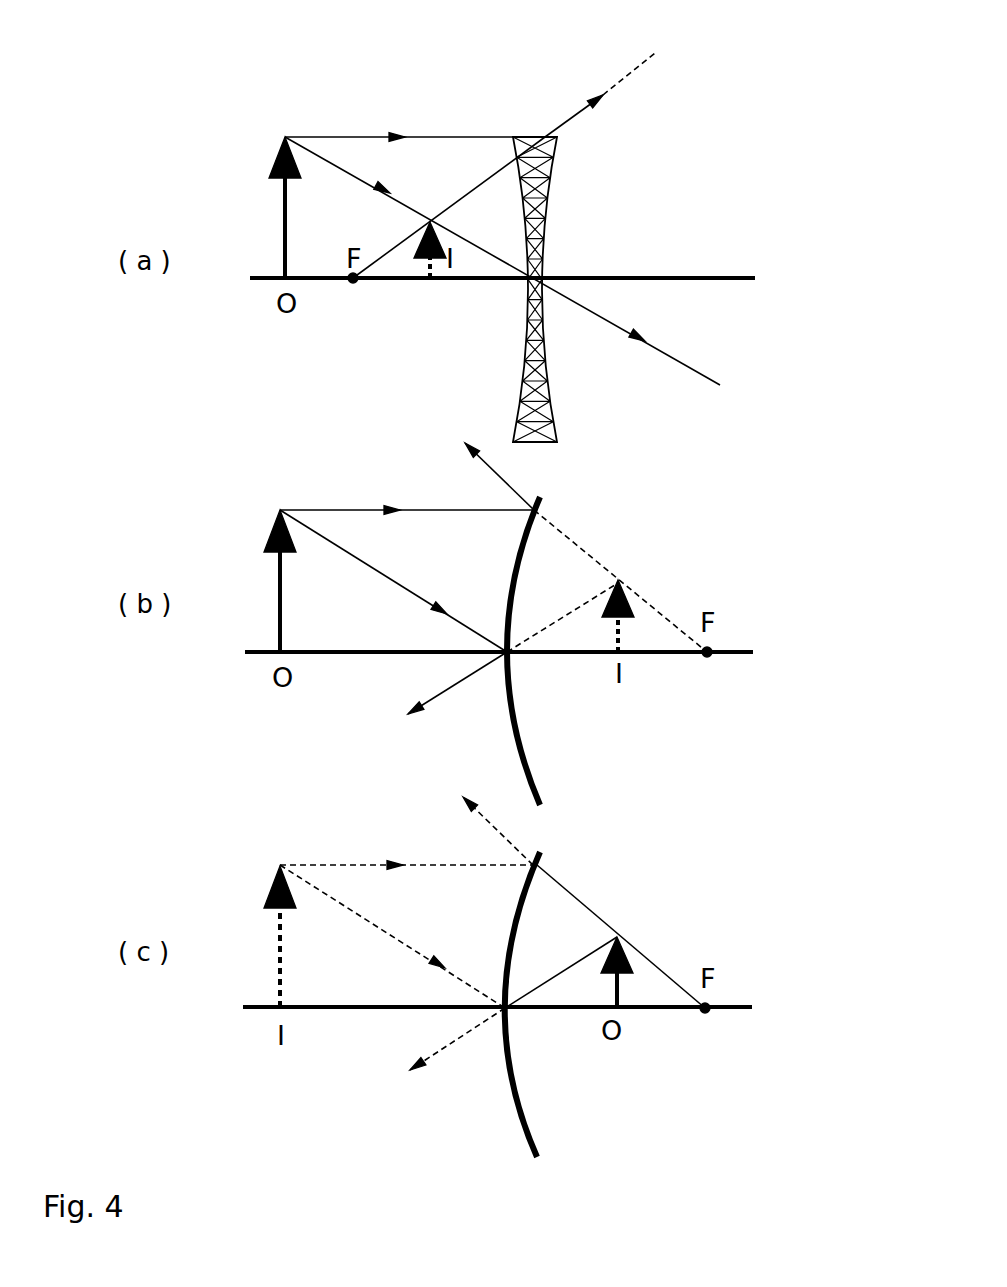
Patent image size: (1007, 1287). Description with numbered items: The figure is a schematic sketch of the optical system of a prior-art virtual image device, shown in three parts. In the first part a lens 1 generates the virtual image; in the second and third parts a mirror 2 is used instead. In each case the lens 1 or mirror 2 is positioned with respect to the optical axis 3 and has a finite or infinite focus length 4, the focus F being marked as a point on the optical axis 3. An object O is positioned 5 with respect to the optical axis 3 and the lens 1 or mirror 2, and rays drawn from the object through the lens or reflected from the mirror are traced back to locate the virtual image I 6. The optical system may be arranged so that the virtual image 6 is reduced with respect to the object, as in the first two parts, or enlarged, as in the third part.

The lens 1 is at (545, 222).
The mirror 2 is at (527, 548).
The optical axis 3 is at (743, 643).
The focus length 4 is at (706, 662).
The object position 5 is at (278, 587).
The virtual image 6 is at (430, 265).